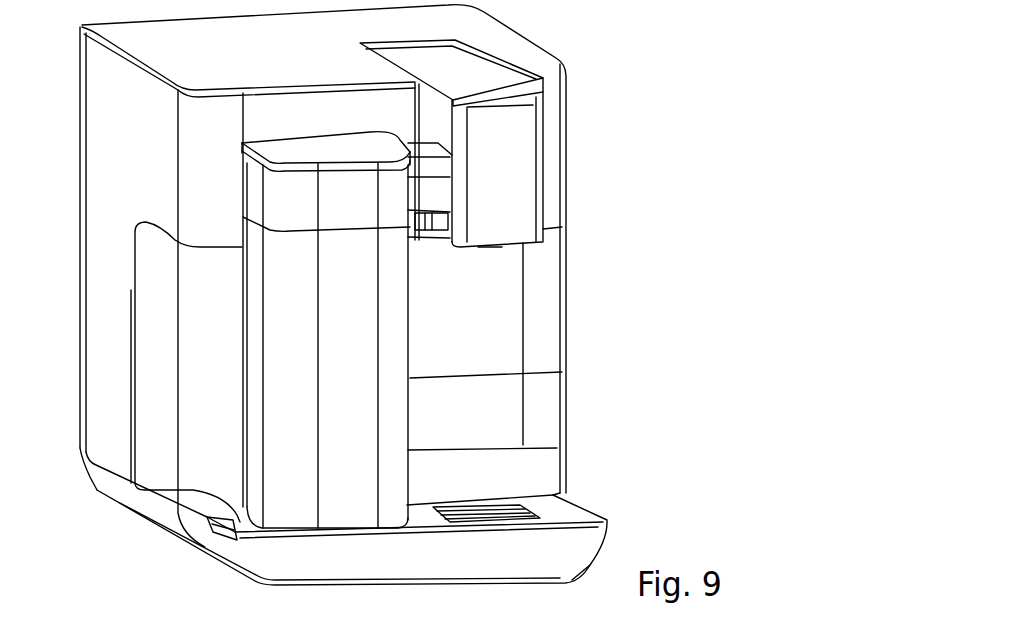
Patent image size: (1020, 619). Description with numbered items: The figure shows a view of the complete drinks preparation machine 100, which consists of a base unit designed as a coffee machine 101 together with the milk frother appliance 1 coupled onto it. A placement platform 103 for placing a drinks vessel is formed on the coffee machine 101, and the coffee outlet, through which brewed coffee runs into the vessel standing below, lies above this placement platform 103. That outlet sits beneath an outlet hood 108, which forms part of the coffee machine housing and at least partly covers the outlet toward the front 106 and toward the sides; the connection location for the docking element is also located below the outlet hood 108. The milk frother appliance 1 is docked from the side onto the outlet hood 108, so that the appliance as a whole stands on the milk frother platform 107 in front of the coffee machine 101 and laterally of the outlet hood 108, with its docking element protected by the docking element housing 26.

The milk frother appliance 1 is at (290, 340).
The docking element housing 26 is at (425, 163).
The drinks preparation machine 100 is at (630, 180).
The coffee machine 101 is at (522, 333).
The placement platform 103 is at (540, 497).
The front 106 is at (495, 362).
The milk frother platform 107 is at (135, 490).
The outlet hood 108 is at (503, 200).